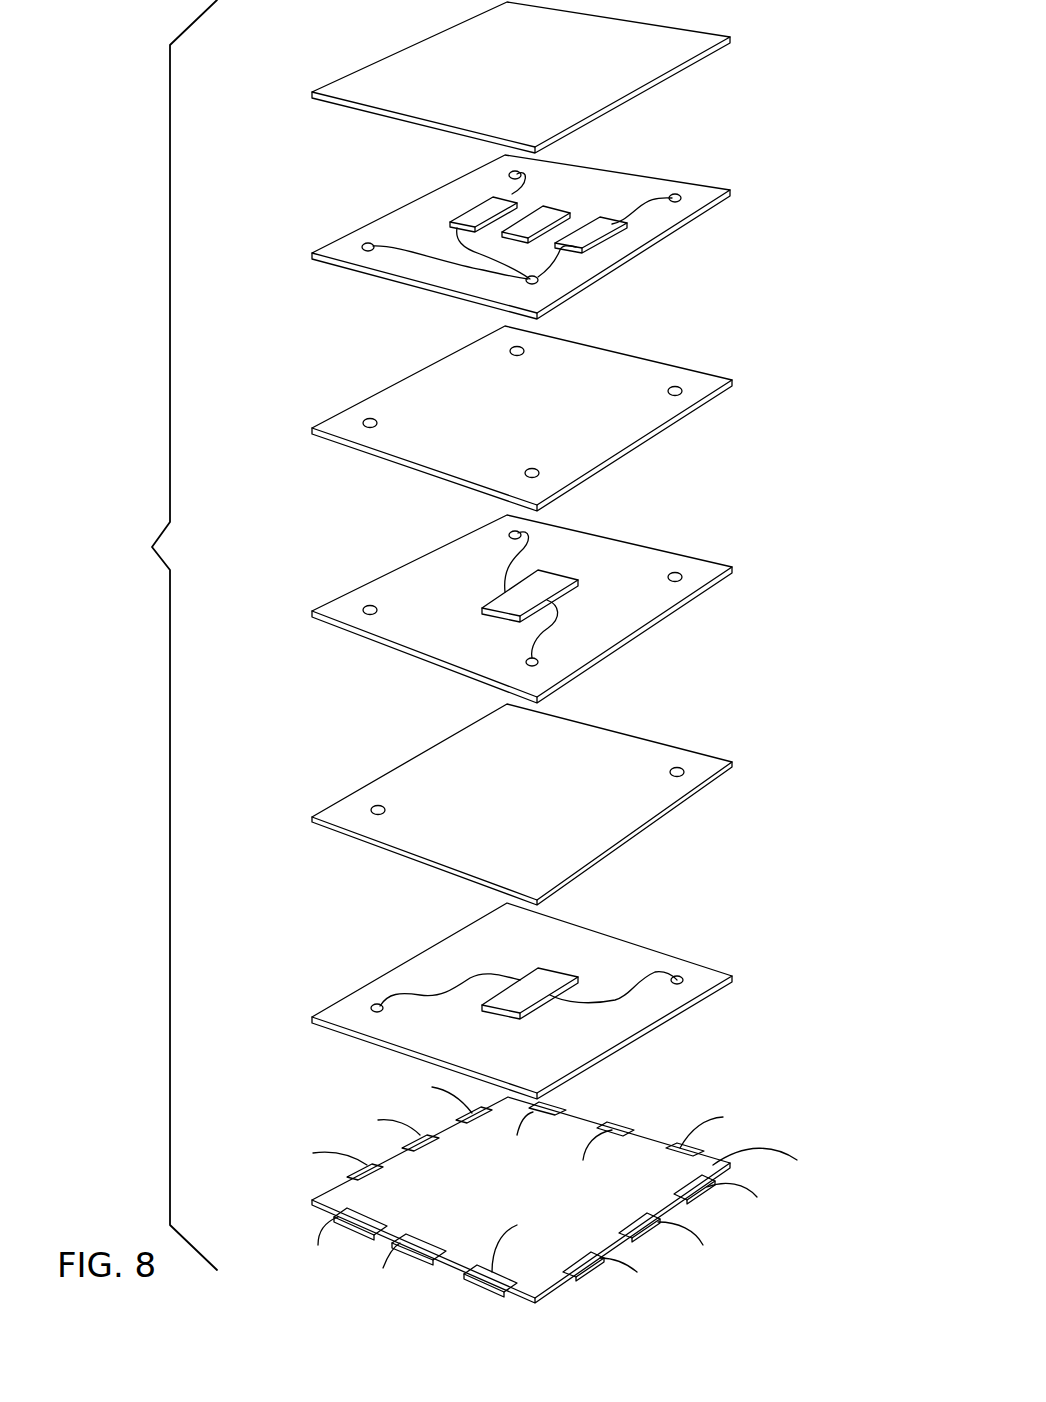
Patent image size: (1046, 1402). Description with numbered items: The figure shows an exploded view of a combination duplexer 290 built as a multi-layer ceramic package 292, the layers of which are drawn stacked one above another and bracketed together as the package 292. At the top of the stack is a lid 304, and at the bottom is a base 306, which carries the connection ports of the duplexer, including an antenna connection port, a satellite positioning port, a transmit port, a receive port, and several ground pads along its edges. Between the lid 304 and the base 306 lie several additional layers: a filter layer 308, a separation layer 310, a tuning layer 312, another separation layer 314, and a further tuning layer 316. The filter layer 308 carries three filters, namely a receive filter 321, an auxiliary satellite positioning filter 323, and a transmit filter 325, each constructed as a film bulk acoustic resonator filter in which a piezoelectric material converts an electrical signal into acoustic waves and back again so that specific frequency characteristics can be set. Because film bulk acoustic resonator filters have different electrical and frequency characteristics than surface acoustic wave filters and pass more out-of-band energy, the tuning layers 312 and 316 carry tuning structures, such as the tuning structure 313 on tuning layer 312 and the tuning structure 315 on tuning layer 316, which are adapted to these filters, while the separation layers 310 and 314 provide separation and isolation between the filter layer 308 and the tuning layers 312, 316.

The combination duplexer 290 is at (328, 64).
The multi-layer ceramic package 292 is at (159, 635).
The lid 304 is at (675, 45).
The base 306 is at (548, 1189).
The filter layer 308 is at (536, 203).
The separation layer 310 is at (620, 428).
The tuning layer 312 is at (522, 593).
The tuning structure 313 is at (515, 602).
The separation layer 314 is at (637, 750).
The radiating element 315 is at (545, 980).
The tuning layer 316 is at (522, 1001).
The receive filter 321 is at (467, 218).
The auxiliary GPS filter 323 is at (533, 224).
The transmit filter 325 is at (617, 222).